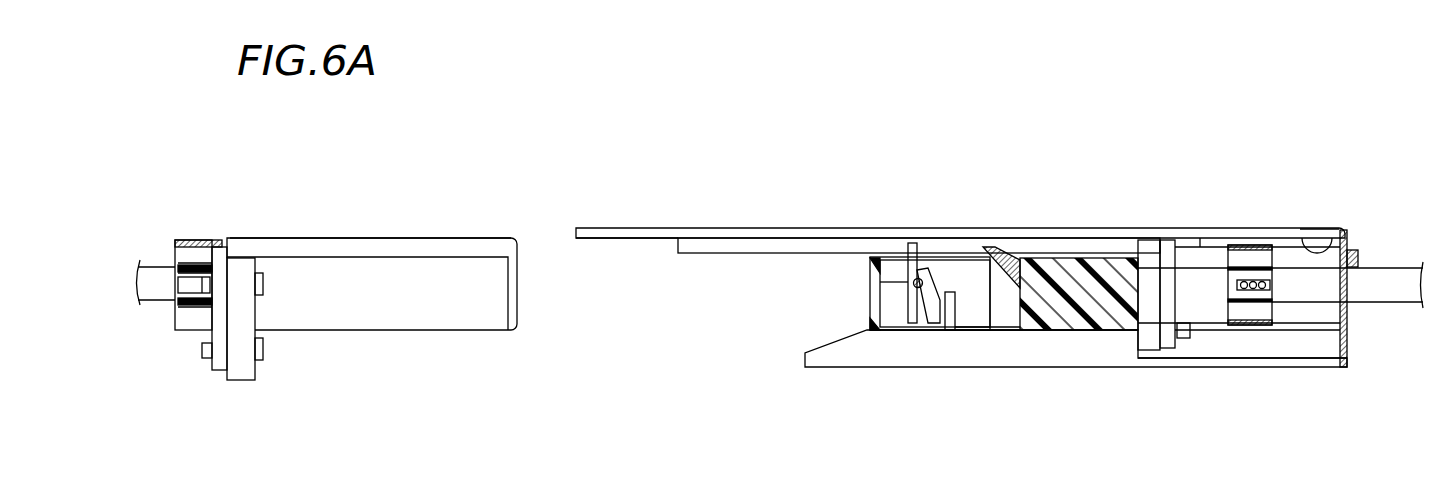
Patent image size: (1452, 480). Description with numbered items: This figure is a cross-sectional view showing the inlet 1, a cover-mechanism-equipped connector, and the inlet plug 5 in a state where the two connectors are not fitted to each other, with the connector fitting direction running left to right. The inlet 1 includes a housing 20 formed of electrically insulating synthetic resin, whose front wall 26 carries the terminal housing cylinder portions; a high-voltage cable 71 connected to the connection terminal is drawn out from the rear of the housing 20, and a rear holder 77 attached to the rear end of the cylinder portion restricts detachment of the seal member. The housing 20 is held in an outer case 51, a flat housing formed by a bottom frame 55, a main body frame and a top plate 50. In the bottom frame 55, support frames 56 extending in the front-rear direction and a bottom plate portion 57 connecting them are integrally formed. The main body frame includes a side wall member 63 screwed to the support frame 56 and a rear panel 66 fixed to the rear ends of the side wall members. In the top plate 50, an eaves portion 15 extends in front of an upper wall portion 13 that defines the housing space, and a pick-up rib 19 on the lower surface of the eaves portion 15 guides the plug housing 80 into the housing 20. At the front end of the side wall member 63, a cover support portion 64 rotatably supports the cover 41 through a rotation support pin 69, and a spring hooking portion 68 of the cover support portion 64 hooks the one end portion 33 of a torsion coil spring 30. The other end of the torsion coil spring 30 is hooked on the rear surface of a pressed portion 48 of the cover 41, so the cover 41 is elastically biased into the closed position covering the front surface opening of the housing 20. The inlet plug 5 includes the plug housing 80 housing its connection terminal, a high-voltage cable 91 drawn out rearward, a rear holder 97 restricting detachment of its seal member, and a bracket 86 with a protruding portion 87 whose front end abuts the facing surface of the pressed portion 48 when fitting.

The inlet 1 is at (1005, 266).
The inlet plug 5 is at (327, 268).
The upper wall portion 13 is at (1332, 232).
The eaves portion 15 is at (621, 239).
The pick-up rib 19 is at (718, 253).
The housing 20 is at (1210, 264).
The front wall 26 is at (1138, 345).
The torsion coil spring 30 is at (900, 306).
The one end portion 33 is at (940, 292).
The cover 41 is at (1005, 280).
The pressed portion 48 is at (908, 250).
The top plate 50 is at (650, 220).
The outer case 51 is at (1325, 218).
The bottom frame 55 is at (1079, 376).
The support frame 56 is at (1005, 353).
The bottom plate portion 57 is at (1245, 368).
The side wall member 63 is at (1098, 278).
The cover support portion 64 is at (859, 307).
The rear panel 66 is at (1350, 323).
The spring hooking portion 68 is at (977, 327).
The rotation support pin 69 is at (878, 282).
The high-voltage cable 71 is at (1408, 260).
The rear holder 77 is at (1250, 256).
The plug housing 80 is at (389, 341).
The bracket 86 is at (208, 375).
The protruding portion 87 is at (412, 247).
The high-voltage cable 91 is at (163, 260).
The rear holder 97 is at (202, 240).